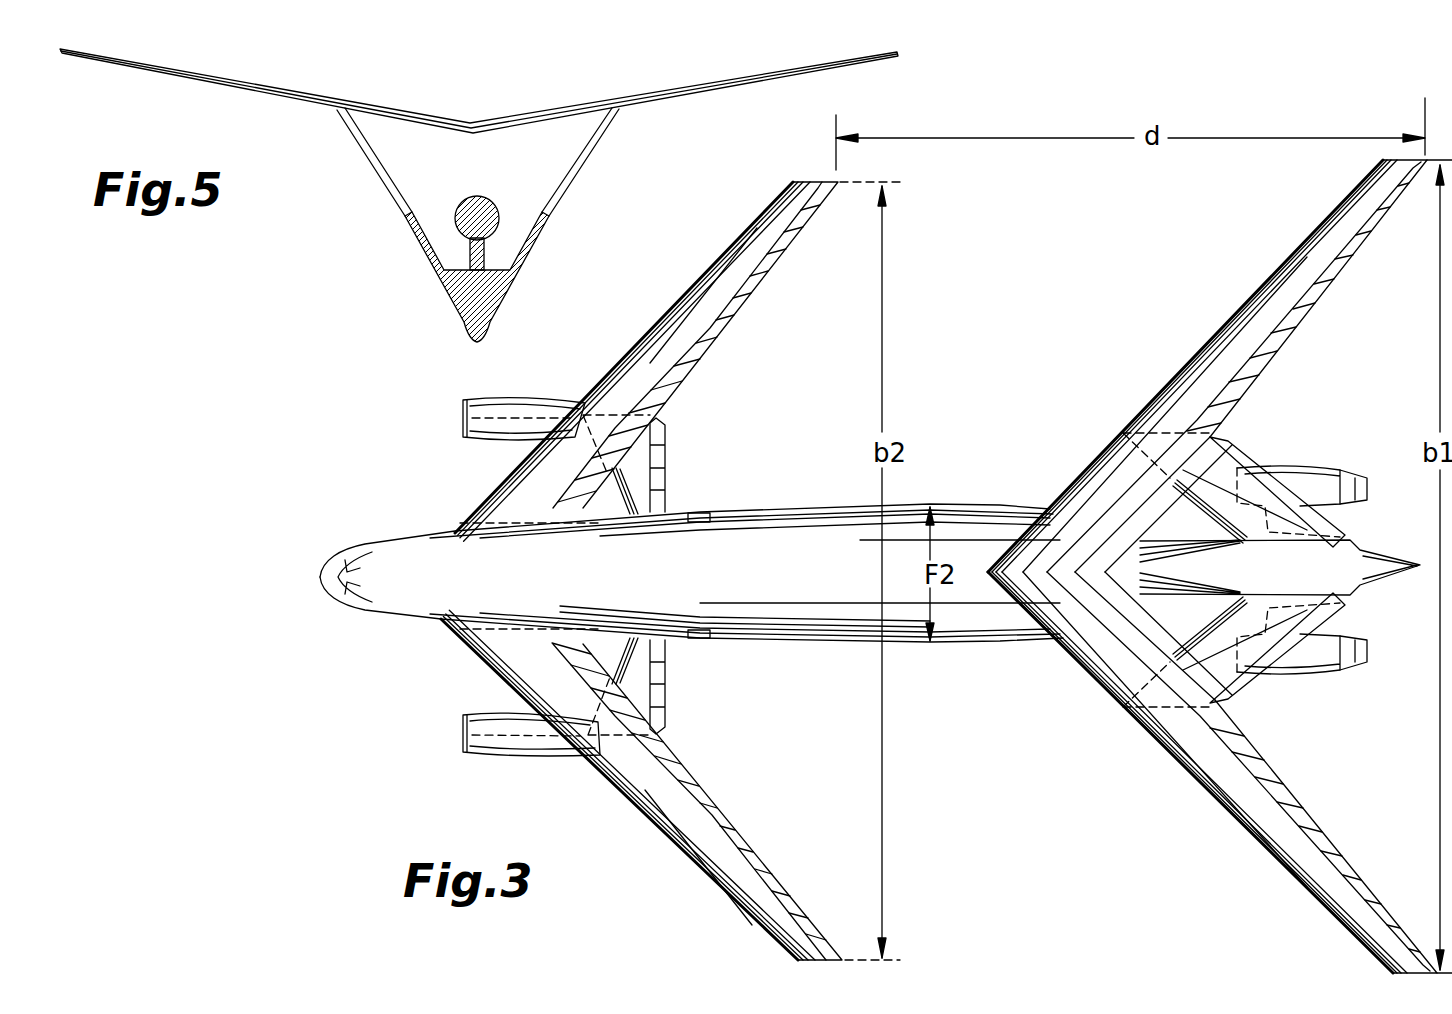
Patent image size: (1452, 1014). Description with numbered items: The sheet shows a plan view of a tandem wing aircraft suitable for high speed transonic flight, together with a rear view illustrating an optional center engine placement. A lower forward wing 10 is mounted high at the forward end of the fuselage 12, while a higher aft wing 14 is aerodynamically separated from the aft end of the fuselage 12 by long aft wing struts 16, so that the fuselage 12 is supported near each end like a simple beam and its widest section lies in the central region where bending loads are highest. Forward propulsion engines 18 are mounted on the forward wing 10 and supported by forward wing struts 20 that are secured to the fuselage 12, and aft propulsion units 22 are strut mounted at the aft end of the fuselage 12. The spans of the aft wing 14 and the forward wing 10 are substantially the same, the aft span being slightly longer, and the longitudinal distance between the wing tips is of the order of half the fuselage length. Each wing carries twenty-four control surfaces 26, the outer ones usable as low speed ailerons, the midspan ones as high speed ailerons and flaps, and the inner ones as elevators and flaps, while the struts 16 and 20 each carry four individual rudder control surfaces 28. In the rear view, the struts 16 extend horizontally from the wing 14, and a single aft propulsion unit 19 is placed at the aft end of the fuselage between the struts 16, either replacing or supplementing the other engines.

In FIG. 3, the forward wing 10 is at (657, 320).
In FIG. 3, the fuselage 12 is at (797, 588).
In FIG. 5, the aft wing 14 is at (660, 99).
In FIG. 3, the aft wing 14 is at (1216, 332).
In FIG. 5, the aft wing struts 16 is at (400, 209).
In FIG. 3, the aft wing struts 16 is at (1205, 501).
In FIG. 3, the forward propulsion engines 18 is at (492, 440).
In FIG. 5, the single aft propulsion unit 19 is at (494, 204).
In FIG. 3, the forward wing struts 20 is at (614, 500).
In FIG. 3, the aft propulsion units 22 is at (1356, 455).
In FIG. 3, the control surfaces 26 is at (739, 318).
In FIG. 3, the rudder control surfaces 28 is at (668, 442).